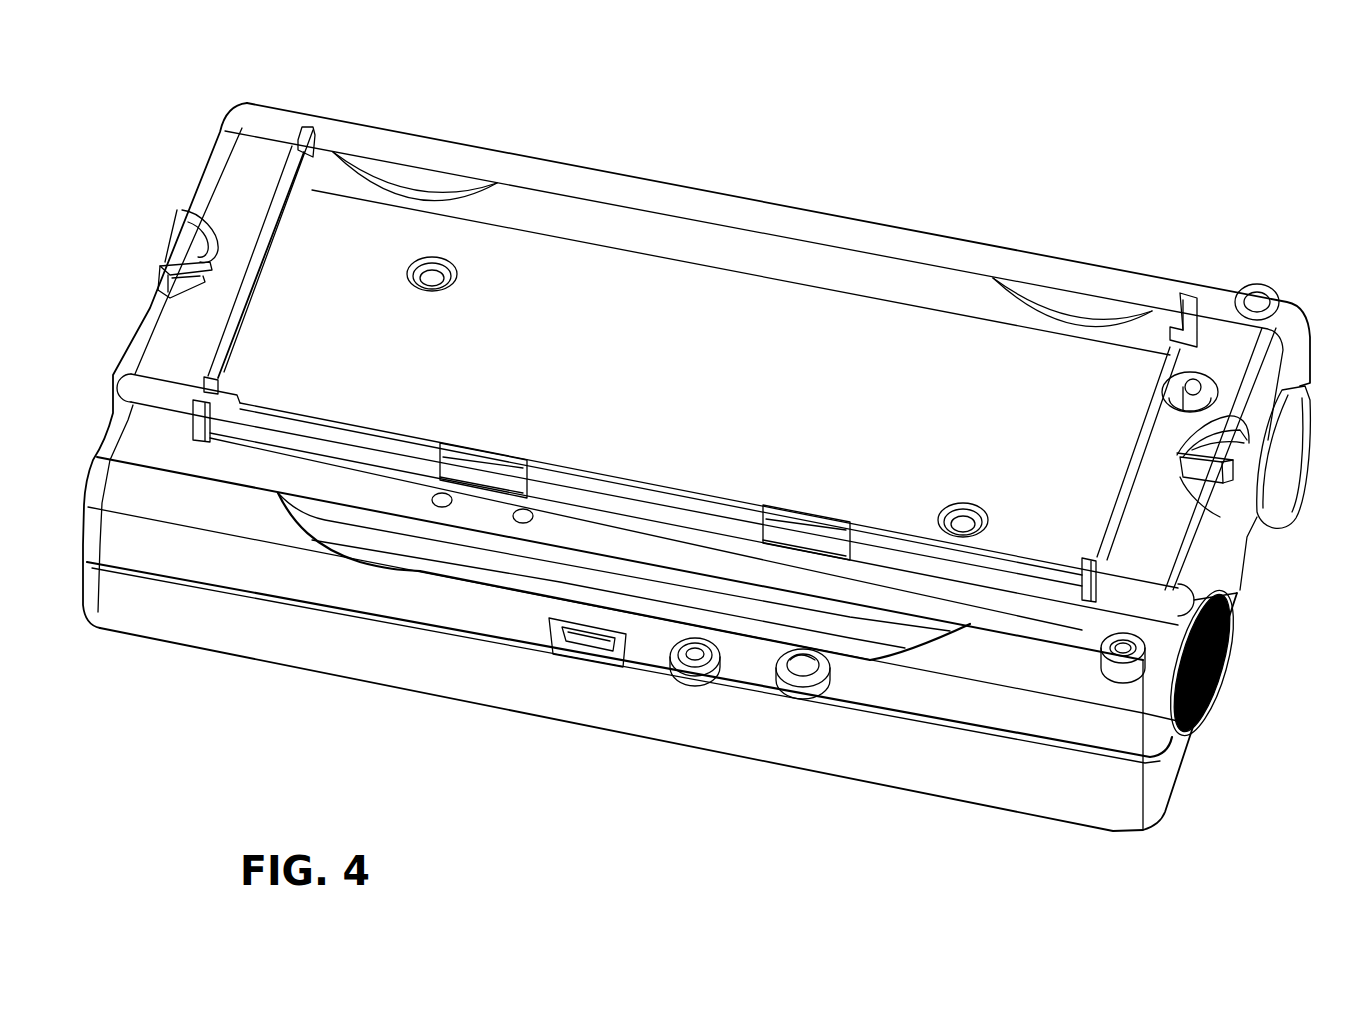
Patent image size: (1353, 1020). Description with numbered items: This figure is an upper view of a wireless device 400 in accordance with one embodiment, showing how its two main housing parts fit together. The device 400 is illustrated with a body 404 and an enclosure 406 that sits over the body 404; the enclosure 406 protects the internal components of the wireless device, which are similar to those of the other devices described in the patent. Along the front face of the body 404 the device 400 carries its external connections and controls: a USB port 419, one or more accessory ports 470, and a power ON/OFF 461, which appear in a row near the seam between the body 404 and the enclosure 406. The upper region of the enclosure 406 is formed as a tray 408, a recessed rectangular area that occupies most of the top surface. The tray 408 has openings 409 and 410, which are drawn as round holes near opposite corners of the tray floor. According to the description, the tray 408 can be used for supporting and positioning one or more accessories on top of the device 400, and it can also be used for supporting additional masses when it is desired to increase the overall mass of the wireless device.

The device 400 is at (1095, 94).
The body 404 is at (1010, 793).
The enclosure 406 is at (863, 233).
The tray 408 is at (840, 364).
The opening 409 is at (437, 268).
The opening 410 is at (962, 518).
The USB port 419 is at (548, 648).
The power ON/OFF 461 is at (804, 672).
The accessory port 470 is at (695, 660).